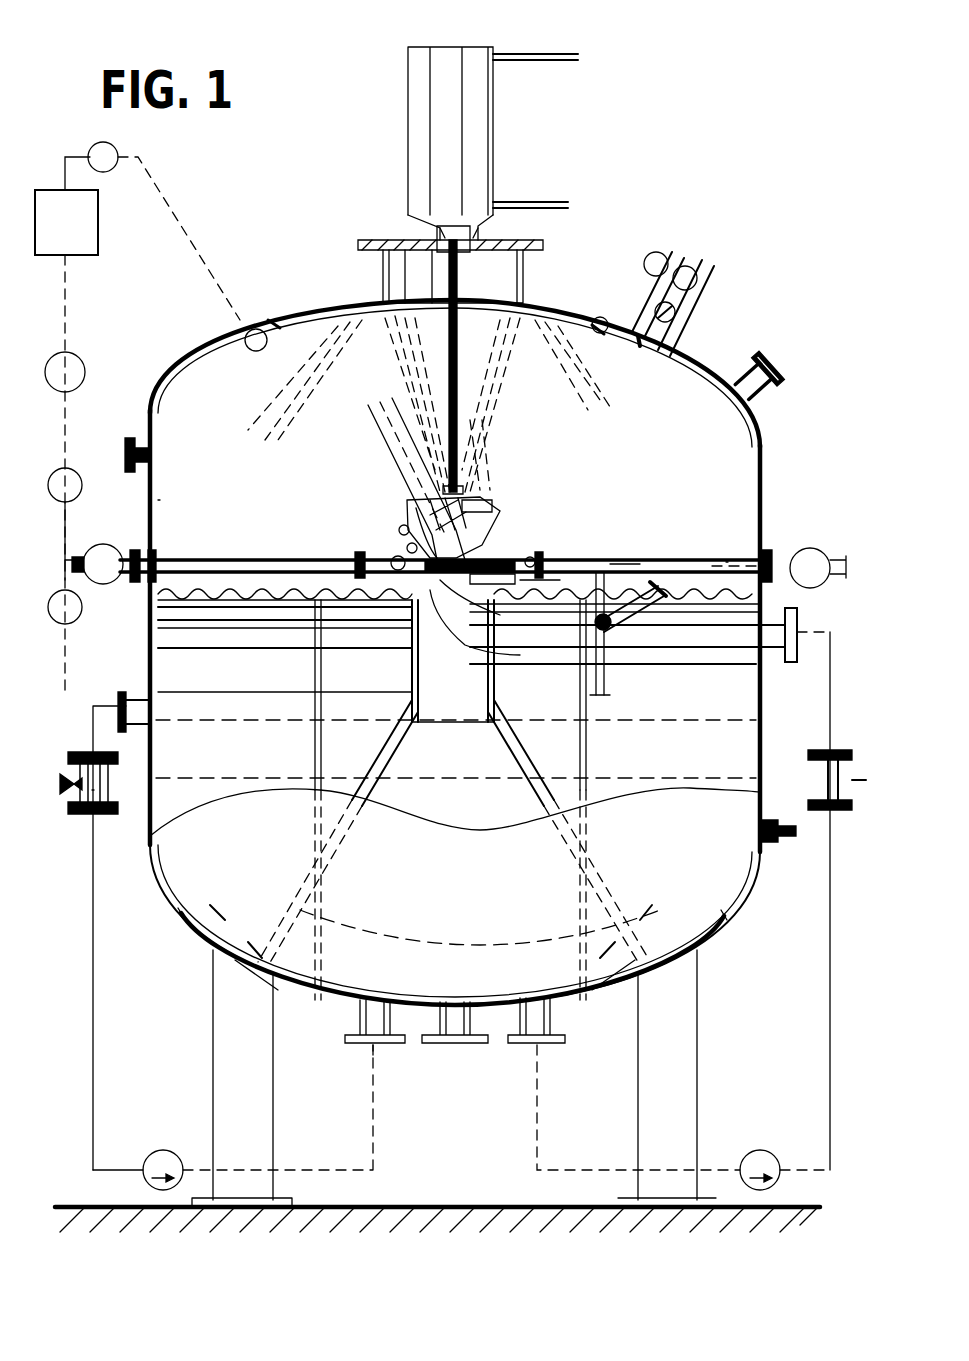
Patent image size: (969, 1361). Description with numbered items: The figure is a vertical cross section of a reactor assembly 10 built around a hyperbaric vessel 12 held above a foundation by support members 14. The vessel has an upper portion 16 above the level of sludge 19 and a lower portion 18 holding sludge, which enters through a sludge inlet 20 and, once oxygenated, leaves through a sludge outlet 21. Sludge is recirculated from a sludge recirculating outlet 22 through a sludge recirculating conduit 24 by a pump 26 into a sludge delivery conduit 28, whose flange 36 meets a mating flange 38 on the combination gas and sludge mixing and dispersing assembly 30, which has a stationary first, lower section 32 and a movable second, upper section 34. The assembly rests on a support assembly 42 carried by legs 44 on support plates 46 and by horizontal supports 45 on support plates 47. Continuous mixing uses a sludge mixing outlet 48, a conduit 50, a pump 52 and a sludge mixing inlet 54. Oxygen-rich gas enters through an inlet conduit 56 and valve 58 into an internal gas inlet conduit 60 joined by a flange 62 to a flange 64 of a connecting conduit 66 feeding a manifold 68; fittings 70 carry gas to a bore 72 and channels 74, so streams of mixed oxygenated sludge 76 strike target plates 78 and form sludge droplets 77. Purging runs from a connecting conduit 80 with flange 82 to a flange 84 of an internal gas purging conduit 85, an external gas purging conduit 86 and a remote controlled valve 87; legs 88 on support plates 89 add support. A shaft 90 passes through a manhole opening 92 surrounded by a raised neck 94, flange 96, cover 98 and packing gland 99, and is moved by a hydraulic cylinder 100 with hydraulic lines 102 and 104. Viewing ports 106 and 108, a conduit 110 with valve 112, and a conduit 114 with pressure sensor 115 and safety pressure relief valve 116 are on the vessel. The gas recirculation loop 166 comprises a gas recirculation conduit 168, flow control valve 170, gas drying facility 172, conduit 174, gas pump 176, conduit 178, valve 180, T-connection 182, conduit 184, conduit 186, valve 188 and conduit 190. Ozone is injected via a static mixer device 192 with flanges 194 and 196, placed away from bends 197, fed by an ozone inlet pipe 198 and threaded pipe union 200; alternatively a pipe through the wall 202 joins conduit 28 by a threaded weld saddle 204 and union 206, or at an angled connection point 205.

The reactor assembly 10 is at (212, 312).
The hyperbaric vessel 12 is at (188, 366).
The support members 14 is at (218, 1076).
The upper portion 16 is at (272, 491).
The lower portion 18 is at (272, 680).
The level of sludge 19 is at (285, 611).
The sludge inlet 20 is at (786, 838).
The sludge outlet 21 is at (458, 1005).
The sludge recirculating outlet 22 is at (550, 1008).
The sludge recirculating conduit 24 is at (540, 1150).
The pump 26 is at (746, 1152).
The sludge delivery conduit 28 is at (645, 648).
The combination gas and sludge mixing and dispersing assembly 30 is at (512, 505).
The first, lower section 32 is at (485, 534).
The second, upper section 34 is at (485, 510).
The flange 36 is at (455, 601).
The mating flange 38 is at (465, 620).
The support assembly 42 is at (412, 678).
The legs 44 is at (392, 740).
The horizontal supports 45 is at (210, 640).
The support plates 46 is at (262, 940).
The support plates 47 is at (285, 605).
The sludge mixing outlet 48 is at (362, 1016).
The conduit 50 is at (372, 1132).
The pump 52 is at (148, 1150).
The sludge mixing inlet 54 is at (130, 700).
The inlet conduit 56 is at (78, 555).
The remote controlled valve 58 is at (102, 545).
The internal gas inlet conduit 60 is at (218, 556).
The flange 62 is at (356, 552).
The flange 64 is at (406, 603).
The connecting conduit 66 is at (392, 556).
The manifold 68 is at (493, 579).
The fittings 70 is at (406, 530).
The bore 72 is at (400, 484).
The channels 74 is at (418, 490).
The streams of mixed oxygenated sludge 76 is at (352, 382).
The sludge droplets 77 is at (358, 330).
The target plates 78 is at (256, 329).
The connecting conduit 80 is at (540, 562).
The flange 82 is at (547, 579).
The flange 84 is at (565, 614).
The internal gas purging conduit 85 is at (632, 558).
The external gas purging conduit 86 is at (772, 556).
The remote controlled valve 87 is at (815, 549).
The legs 88 is at (312, 762).
The support plates 89 is at (325, 985).
The shaft 90 is at (458, 278).
The manhole opening 92 is at (382, 278).
The raised neck 94 is at (360, 246).
The flange 96 is at (385, 240).
The cover 98 is at (412, 225).
The packing gland 99 is at (440, 258).
The hydraulic cylinder 100 is at (482, 143).
The hydraulic line 102 is at (530, 52).
The hydraulic line 104 is at (532, 203).
The viewing port 106 is at (732, 366).
The viewing port 108 is at (136, 448).
The conduit 110 is at (648, 292).
The valve 112 is at (650, 256).
The conduit 114 is at (670, 336).
The pressure sensor 115 is at (676, 312).
The safety pressure relief valve 116 is at (697, 268).
The oxygen-rich gas recirculation loop 166 is at (55, 172).
The gas recirculation conduit 168 is at (178, 212).
The flow control valve 170 is at (112, 147).
The gas drying facility 172 is at (98, 222).
The conduit 174 is at (65, 285).
The gas pump 176 is at (85, 370).
The conduit 178 is at (65, 410).
The valve 180 is at (80, 480).
The T-connection 182 is at (68, 588).
The conduit 184 is at (70, 540).
The conduit 186 is at (66, 566).
The valve 188 is at (80, 620).
The conduit 190 is at (112, 690).
The static mixer device 192 is at (826, 782).
The flange 194 is at (818, 750).
The flange 196 is at (822, 805).
The bends 197 is at (448, 625).
The ozone inlet pipe 198 is at (855, 752).
The threaded pipe union 200 is at (862, 782).
The wall 202 is at (758, 506).
The threaded weld saddle 204 is at (608, 625).
The angled connection point 205 is at (592, 560).
The union 206 is at (655, 565).